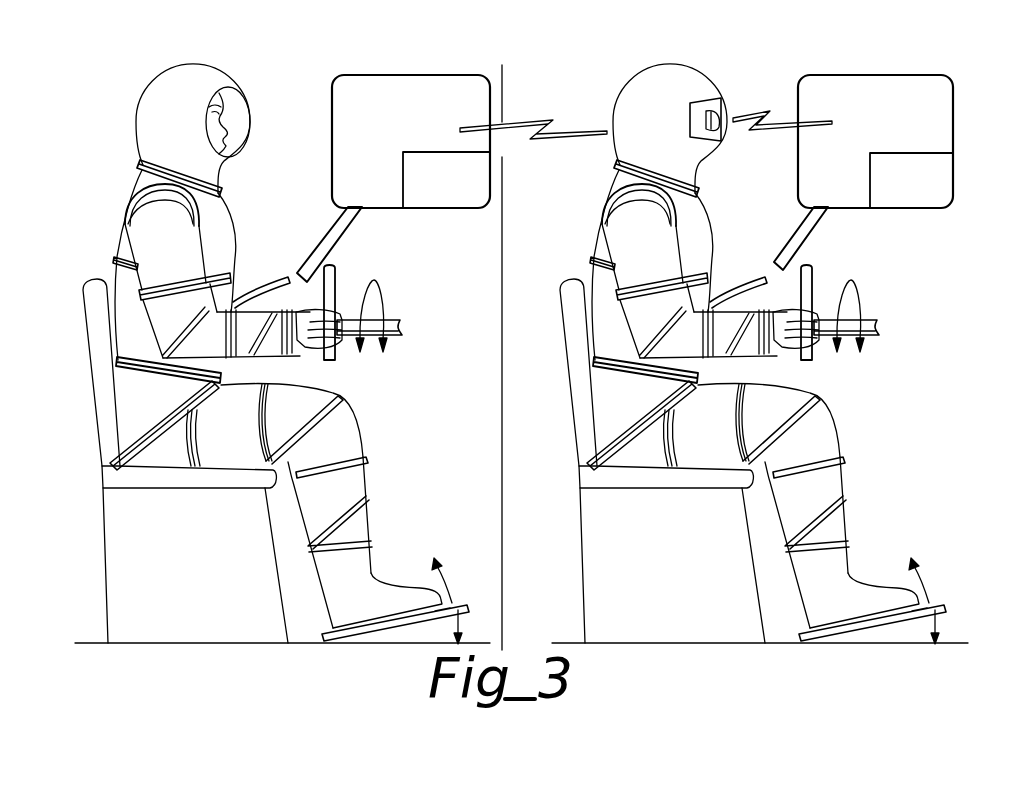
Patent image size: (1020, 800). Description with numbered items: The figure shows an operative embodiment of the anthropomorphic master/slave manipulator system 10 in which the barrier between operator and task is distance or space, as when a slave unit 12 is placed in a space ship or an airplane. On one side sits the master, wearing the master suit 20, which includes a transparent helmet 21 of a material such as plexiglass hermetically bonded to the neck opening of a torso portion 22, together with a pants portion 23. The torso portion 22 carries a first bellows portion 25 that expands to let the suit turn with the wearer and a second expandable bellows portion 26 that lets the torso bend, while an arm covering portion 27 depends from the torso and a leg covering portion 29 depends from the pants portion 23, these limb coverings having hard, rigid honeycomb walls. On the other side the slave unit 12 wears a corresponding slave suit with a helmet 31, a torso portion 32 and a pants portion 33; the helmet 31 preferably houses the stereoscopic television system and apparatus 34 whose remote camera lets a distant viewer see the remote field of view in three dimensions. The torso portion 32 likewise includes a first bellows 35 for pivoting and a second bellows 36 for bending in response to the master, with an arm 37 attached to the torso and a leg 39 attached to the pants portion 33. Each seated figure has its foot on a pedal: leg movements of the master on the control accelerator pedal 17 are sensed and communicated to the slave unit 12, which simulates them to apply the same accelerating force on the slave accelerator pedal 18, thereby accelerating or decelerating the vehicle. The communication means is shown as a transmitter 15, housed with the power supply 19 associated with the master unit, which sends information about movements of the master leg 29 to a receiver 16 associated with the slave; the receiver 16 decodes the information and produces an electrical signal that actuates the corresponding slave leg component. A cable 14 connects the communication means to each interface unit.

The anthropomorphic master/slave manipulator system 10 is at (298, 86).
The slave unit 12 is at (703, 66).
The cable 14 is at (339, 235).
The transmitter 15 is at (411, 141).
The receiver 16 is at (875, 141).
The control accelerator pedal 17 is at (459, 607).
The slave accelerator pedal 18 is at (930, 607).
The power supply 19 is at (678, 180).
The master suit 20 is at (236, 208).
The transparent helmet 21 is at (146, 92).
The torso portion 22 is at (247, 239).
The pants portion 23 is at (361, 441).
The first bellows portion 25 is at (235, 278).
The second expandable bellows portion 26 is at (112, 262).
The arm covering portion 27 is at (152, 243).
The leg covering portion 29 is at (334, 424).
The helmet 31 is at (641, 74).
The torso portion 32 is at (686, 222).
The pants portion 33 is at (838, 442).
The stereoscopic television system and apparatus 34 is at (727, 118).
The first bellows 35 is at (713, 262).
The second bellows 36 is at (586, 265).
The arm 37 is at (623, 246).
The leg 39 is at (810, 424).